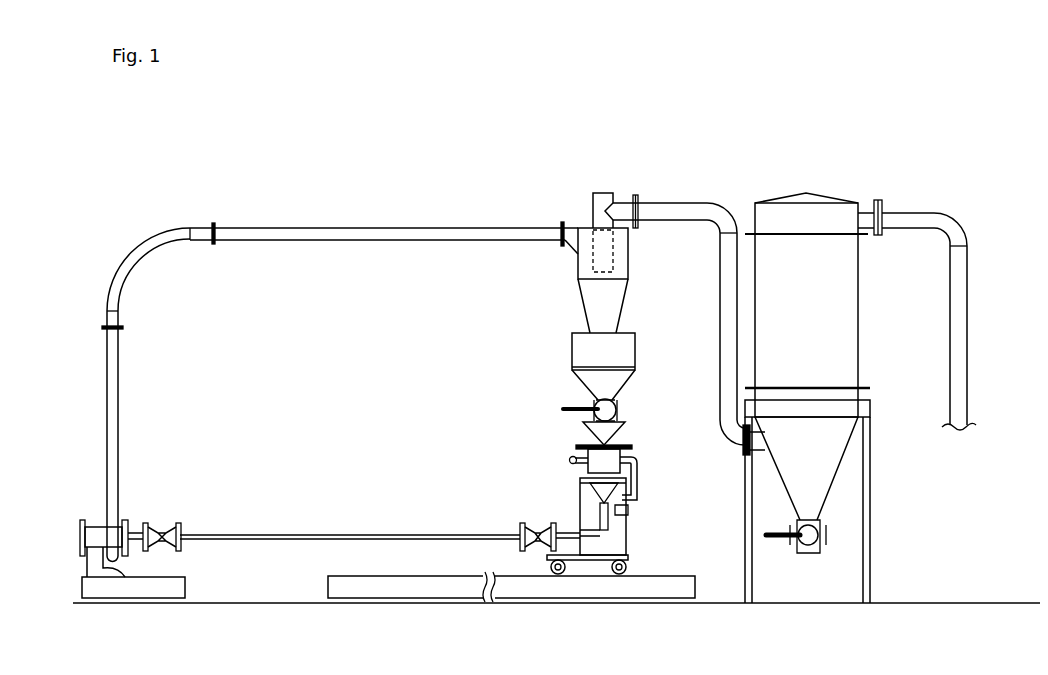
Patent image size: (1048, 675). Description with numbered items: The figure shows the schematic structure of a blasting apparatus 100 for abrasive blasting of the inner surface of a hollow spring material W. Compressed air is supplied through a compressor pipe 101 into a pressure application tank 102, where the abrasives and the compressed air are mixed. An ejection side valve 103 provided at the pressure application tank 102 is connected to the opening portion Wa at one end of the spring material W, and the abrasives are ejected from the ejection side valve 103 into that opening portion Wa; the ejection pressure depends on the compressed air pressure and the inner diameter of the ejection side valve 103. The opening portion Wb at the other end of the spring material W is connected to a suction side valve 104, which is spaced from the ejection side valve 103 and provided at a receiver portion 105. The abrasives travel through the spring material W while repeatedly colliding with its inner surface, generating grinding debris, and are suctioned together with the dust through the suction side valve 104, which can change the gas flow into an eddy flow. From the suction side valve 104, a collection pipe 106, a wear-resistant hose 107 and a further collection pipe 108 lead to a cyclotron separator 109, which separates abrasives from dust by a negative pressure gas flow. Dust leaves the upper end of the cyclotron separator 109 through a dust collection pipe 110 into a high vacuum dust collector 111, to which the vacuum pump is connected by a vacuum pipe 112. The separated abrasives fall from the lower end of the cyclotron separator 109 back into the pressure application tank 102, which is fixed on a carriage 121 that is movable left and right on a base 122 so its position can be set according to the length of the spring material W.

The blasting apparatus 100 is at (717, 172).
The compressor pipe 101 is at (570, 460).
The pressure application tank 102 is at (610, 456).
The ejection side valve 103 is at (535, 522).
The suction side valve 104 is at (168, 522).
The receiver portion 105 is at (98, 525).
The collection pipe 106 is at (113, 410).
The wear-resistant hose 107 is at (143, 248).
The collection pipe 108 is at (388, 232).
The cyclotron separator 109 is at (583, 300).
The dust collection pipe 110 is at (668, 208).
The high vacuum dust collector 111 is at (825, 215).
The vacuum pipe 112 is at (958, 268).
The carriage 121 is at (627, 540).
The base 122 is at (600, 592).
The hollow spring material W is at (265, 534).
The opening portion Wa is at (563, 532).
The opening portion Wb is at (138, 528).